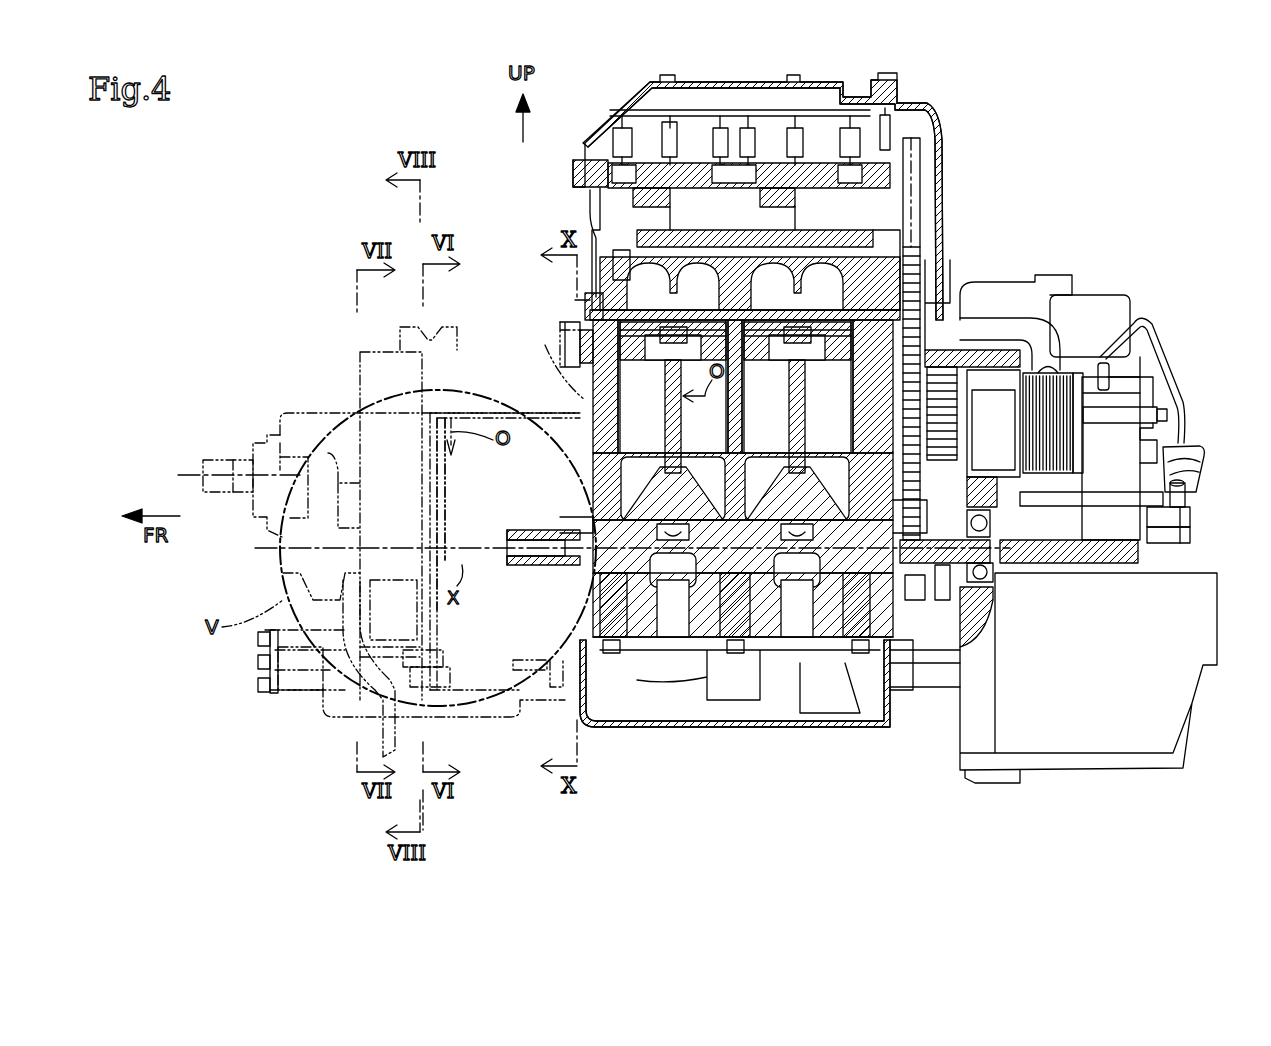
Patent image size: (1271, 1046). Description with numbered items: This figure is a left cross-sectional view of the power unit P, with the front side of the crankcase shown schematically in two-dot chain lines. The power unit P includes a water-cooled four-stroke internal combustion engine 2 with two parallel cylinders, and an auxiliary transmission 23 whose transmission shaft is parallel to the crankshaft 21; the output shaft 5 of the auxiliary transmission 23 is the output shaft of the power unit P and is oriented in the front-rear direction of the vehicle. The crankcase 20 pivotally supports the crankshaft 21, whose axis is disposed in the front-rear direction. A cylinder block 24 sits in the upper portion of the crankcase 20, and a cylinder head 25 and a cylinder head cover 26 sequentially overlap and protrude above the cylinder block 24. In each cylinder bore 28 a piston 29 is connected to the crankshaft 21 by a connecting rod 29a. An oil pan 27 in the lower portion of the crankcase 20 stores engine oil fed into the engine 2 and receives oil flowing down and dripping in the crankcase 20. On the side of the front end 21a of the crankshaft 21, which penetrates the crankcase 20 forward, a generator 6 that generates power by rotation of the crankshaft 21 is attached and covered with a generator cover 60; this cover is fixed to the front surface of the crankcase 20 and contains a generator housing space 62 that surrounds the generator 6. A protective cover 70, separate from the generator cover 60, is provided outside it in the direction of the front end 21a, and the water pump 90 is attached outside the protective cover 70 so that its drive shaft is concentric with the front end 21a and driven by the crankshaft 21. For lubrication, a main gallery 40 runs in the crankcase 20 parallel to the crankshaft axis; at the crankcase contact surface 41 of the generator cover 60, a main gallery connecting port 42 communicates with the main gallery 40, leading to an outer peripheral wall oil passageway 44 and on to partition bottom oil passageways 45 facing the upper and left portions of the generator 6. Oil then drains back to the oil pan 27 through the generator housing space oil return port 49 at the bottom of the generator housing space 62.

The internal combustion engine 2 is at (573, 300).
The output shaft 5 is at (240, 458).
The generator 6 is at (478, 466).
The crankcase 20 is at (595, 485).
The crankshaft 21 is at (560, 570).
The front end 21a is at (512, 570).
The auxiliary transmission 23 is at (328, 405).
The cylinder block 24 is at (593, 440).
The cylinder head 25 is at (582, 200).
The cylinder head cover 26 is at (612, 118).
The oil pan 27 is at (773, 700).
The cylinder bore 28 is at (620, 388).
The piston 29 is at (820, 352).
The connecting rod 29a is at (808, 408).
The main gallery 40 is at (690, 418).
The crankcase contact surface 41 is at (580, 330).
The main gallery connecting port 42 is at (565, 398).
The outer peripheral wall oil passageway 44 is at (540, 398).
The partition bottom oil passageway 45 is at (445, 530).
The generator housing space oil return port 49 is at (543, 652).
The generator cover 60 is at (470, 348).
The generator housing space 62 is at (492, 496).
The protective cover 70 is at (375, 348).
The water pump 90 is at (300, 640).
The power unit P is at (1033, 157).